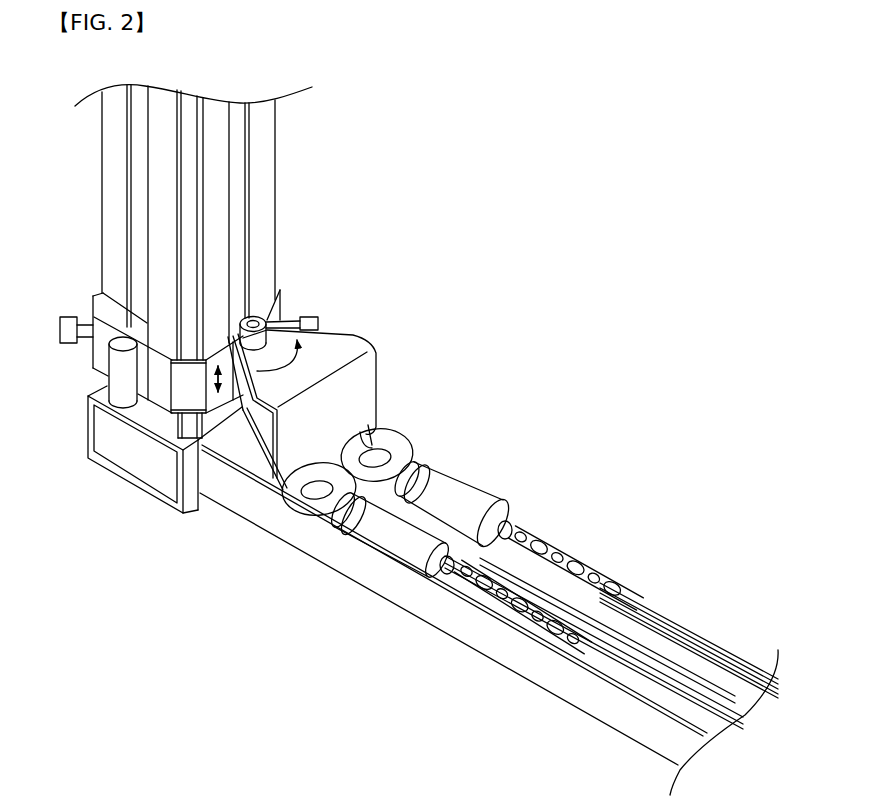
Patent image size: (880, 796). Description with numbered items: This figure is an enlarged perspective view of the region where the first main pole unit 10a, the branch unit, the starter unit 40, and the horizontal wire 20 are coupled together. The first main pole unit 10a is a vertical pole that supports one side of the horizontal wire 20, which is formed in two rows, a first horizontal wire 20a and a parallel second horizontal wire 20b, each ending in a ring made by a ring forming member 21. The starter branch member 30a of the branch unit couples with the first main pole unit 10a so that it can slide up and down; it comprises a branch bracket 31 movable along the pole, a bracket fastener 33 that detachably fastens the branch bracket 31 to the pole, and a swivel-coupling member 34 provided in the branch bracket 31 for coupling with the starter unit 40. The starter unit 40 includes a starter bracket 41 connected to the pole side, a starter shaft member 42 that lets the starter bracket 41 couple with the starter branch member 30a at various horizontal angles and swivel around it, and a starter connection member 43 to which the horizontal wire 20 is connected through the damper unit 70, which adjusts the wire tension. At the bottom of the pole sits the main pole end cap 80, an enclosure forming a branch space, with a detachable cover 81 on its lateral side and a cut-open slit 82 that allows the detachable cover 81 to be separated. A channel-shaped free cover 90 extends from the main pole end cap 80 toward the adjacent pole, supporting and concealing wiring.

The first main pole unit 10a is at (96, 158).
The starter branch member 30a is at (124, 367).
The branch bracket 31 is at (160, 394).
The bracket fastener 33 is at (59, 330).
The swivel-coupling member 34 is at (118, 383).
The starter unit 40 is at (345, 388).
The starter bracket 41 is at (350, 342).
The starter shaft member 42 is at (267, 315).
The starter connection member 43 is at (393, 440).
The damper unit 70 is at (460, 503).
The ring forming member 21 is at (512, 602).
The horizontal wire 20 is at (611, 640).
The first horizontal wire 20a is at (631, 667).
The second horizontal wire 20b is at (710, 645).
The main pole end cap 80 is at (150, 476).
The detachable cover 81 is at (123, 450).
The cut-open slit 82 is at (163, 503).
The free cover 90 is at (405, 628).